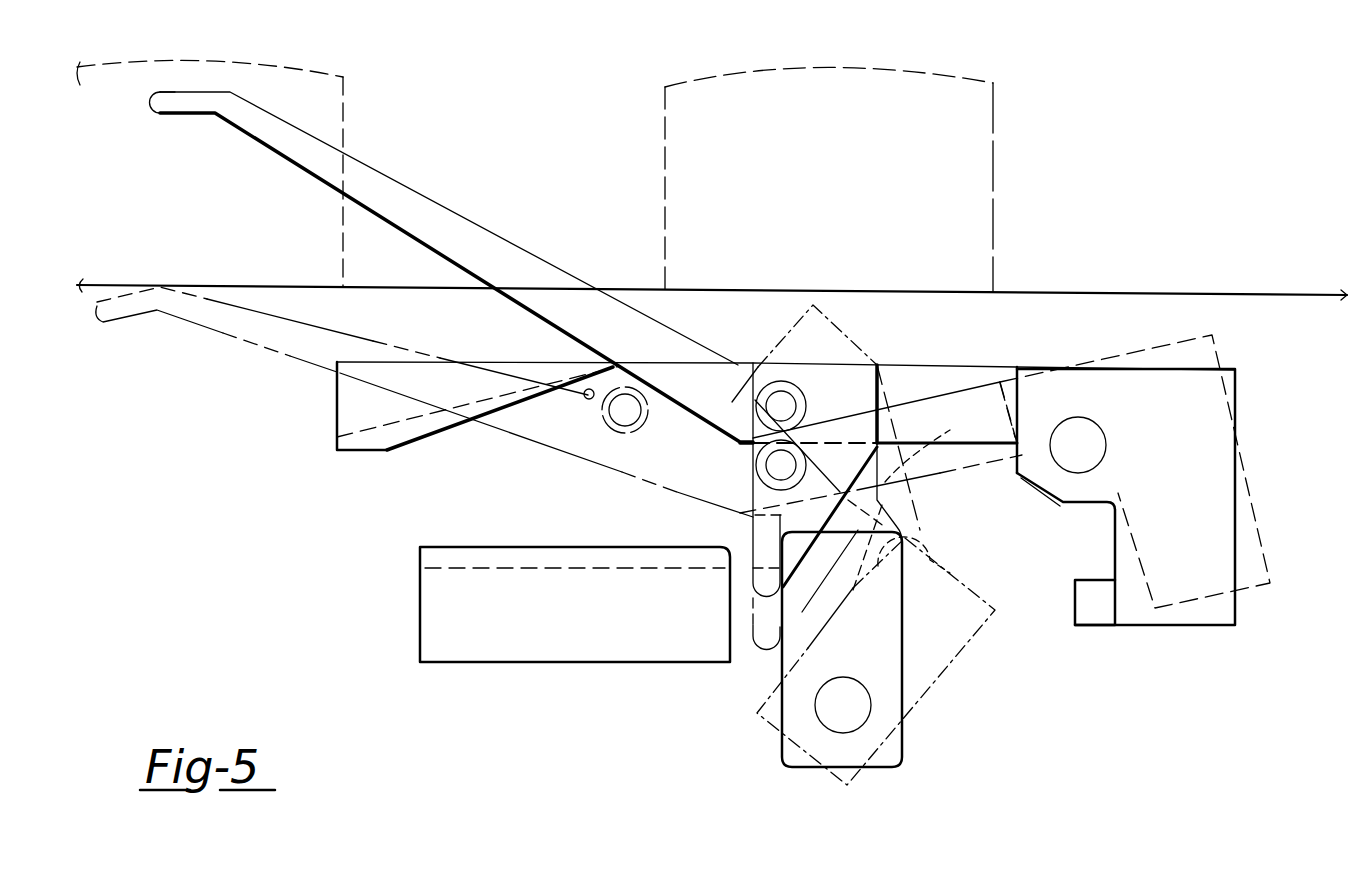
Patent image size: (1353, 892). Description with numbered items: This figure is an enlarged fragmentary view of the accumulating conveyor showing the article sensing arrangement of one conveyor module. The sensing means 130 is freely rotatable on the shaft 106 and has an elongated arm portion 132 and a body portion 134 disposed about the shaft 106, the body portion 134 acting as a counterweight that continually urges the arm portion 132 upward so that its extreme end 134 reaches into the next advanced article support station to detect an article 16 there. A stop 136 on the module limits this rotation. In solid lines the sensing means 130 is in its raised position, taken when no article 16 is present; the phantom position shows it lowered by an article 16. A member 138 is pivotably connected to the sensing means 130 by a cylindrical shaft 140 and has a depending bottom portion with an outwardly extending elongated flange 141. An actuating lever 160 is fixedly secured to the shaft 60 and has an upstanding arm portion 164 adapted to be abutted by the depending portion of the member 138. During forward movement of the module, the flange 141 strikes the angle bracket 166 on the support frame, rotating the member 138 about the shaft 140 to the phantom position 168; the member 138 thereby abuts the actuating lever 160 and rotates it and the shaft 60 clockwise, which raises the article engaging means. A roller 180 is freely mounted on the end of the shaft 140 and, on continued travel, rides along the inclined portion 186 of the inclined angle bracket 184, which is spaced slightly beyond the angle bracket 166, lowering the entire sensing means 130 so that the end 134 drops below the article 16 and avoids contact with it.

The article 16 is at (343, 72).
The shaft 60 is at (875, 718).
The shaft 106 is at (1080, 477).
The sensing means 130 is at (580, 212).
The arm portion 132 is at (408, 188).
The body portion 134 is at (165, 113).
The stop 136 is at (1095, 613).
The member 138 is at (882, 398).
The cylindrical shaft 140 is at (775, 376).
The elongated flange 141 is at (757, 542).
The actuating lever 160 is at (795, 673).
The upstanding arm portion 164 is at (888, 530).
The angle bracket 166 is at (507, 643).
The phantom position of member 168 is at (913, 470).
The roller 180 is at (610, 425).
The inclined angle bracket 184 is at (398, 452).
The inclined portion 186 is at (583, 390).